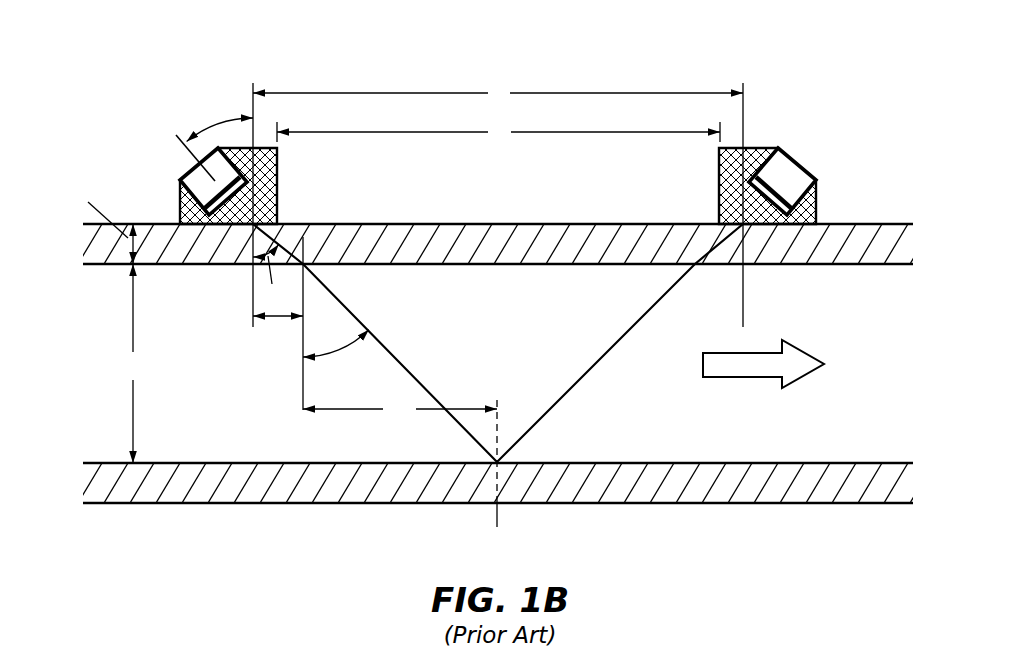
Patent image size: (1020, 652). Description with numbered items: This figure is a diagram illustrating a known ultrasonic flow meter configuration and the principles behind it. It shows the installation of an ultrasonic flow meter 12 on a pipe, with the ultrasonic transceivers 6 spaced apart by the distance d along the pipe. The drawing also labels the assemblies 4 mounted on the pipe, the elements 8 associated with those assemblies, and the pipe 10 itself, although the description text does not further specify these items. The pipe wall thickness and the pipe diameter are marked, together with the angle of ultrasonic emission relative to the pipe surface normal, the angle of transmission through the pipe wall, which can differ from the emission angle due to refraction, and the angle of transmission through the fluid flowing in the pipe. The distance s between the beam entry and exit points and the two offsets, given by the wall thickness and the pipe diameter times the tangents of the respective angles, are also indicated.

The transducer assembly 4 is at (757, 156).
The ultrasonic transceivers 6 is at (192, 207).
The transducer element 8 is at (222, 191).
The pipe 10 is at (792, 505).
The ultrasonic flow meter 12 is at (485, 286).